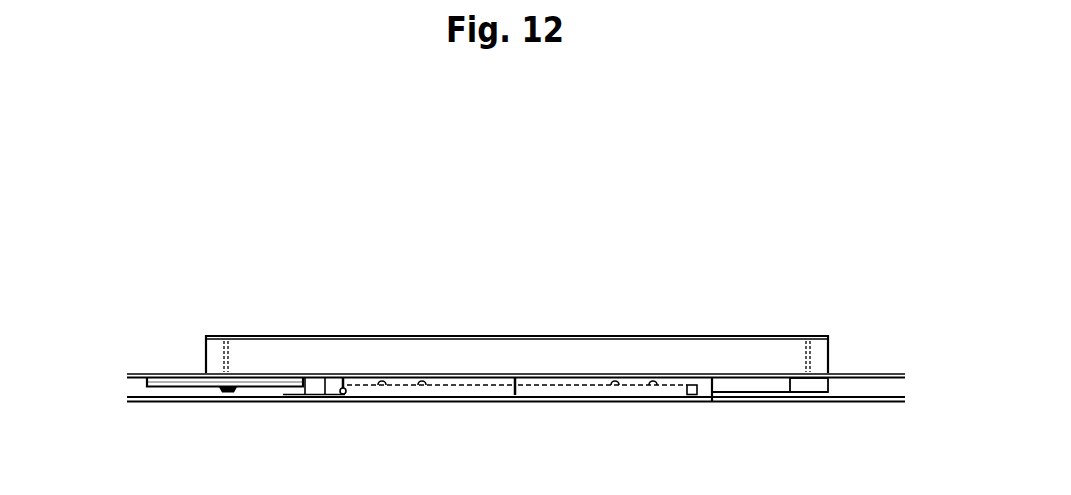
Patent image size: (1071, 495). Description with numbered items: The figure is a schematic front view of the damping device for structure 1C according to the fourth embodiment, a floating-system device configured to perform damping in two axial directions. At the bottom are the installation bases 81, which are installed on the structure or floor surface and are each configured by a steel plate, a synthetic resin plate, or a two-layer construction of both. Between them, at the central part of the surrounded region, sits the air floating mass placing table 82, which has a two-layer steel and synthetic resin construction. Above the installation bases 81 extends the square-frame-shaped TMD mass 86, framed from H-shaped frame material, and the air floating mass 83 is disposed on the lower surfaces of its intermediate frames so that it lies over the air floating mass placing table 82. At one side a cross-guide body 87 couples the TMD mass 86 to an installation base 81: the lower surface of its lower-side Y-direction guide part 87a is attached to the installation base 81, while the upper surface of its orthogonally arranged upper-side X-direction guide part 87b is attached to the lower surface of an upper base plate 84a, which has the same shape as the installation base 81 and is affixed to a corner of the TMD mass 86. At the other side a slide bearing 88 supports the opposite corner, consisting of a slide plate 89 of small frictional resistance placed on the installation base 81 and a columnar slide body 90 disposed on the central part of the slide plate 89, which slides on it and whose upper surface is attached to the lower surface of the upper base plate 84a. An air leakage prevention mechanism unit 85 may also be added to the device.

The damping device for structure 1C is at (262, 293).
The installation base 81 is at (133, 403).
The air floating mass placing table 82 is at (478, 402).
The air floating mass 83 is at (447, 380).
The upper base plate 84a is at (133, 373).
The air leakage prevention mechanism unit 85 is at (344, 394).
The TMD mass 86 is at (633, 328).
The cross-guide body 87 is at (188, 396).
The Y-direction guide part 87a is at (236, 393).
The X-direction guide part 87b is at (176, 373).
The slide bearing 88 is at (915, 386).
The slide plate 89 is at (750, 390).
The columnar slide body 90 is at (808, 394).